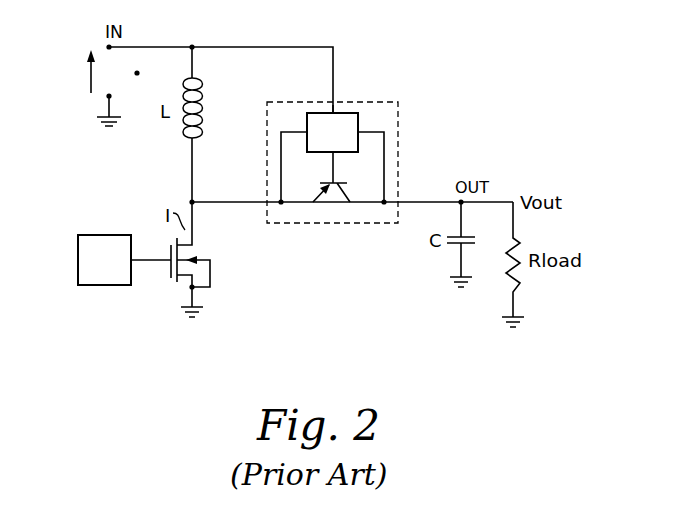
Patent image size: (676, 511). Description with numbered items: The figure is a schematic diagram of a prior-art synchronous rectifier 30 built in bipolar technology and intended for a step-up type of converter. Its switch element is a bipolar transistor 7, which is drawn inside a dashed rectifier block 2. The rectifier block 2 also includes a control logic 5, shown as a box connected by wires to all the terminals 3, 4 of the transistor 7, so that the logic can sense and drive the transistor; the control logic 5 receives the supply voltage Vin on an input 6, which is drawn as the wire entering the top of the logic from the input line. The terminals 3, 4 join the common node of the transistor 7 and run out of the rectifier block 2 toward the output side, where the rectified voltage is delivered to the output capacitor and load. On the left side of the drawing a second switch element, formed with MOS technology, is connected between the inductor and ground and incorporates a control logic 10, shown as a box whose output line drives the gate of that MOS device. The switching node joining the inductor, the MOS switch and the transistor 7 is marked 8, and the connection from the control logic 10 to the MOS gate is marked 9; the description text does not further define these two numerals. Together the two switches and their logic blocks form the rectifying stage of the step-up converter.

The synchronous rectifier 30 is at (508, 52).
The rectifier block 2 is at (400, 115).
The control logic 5 is at (332, 132).
The input 6 is at (333, 110).
The terminal 3 is at (281, 205).
The bipolar transistor 7 is at (341, 195).
The terminal 4 is at (384, 205).
The switching node 8 is at (193, 204).
The gate drive line 9 is at (132, 263).
The control logic 10 is at (93, 235).